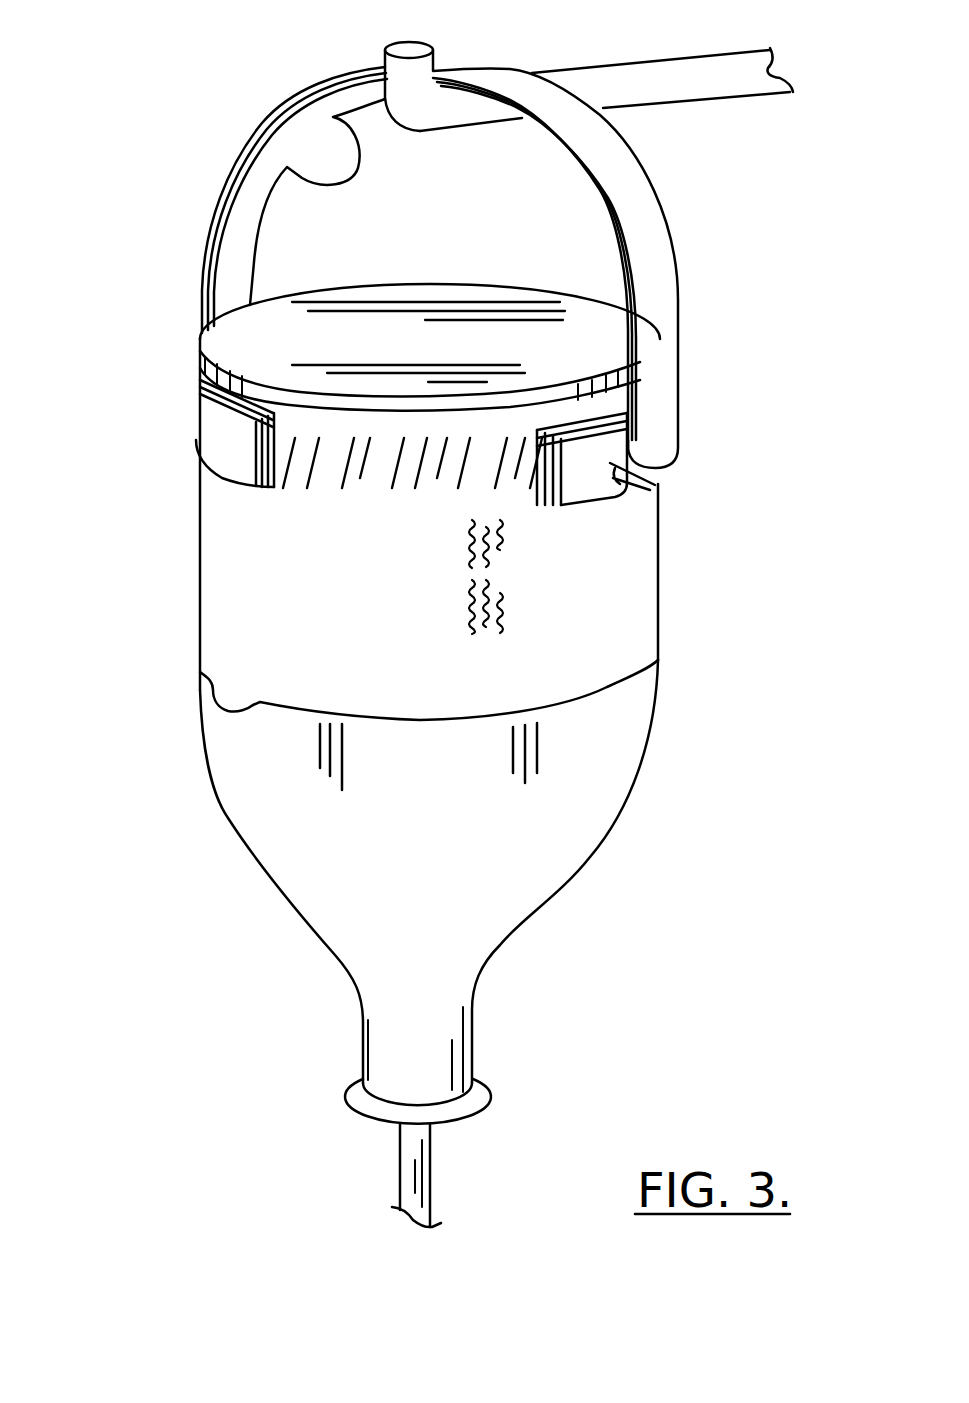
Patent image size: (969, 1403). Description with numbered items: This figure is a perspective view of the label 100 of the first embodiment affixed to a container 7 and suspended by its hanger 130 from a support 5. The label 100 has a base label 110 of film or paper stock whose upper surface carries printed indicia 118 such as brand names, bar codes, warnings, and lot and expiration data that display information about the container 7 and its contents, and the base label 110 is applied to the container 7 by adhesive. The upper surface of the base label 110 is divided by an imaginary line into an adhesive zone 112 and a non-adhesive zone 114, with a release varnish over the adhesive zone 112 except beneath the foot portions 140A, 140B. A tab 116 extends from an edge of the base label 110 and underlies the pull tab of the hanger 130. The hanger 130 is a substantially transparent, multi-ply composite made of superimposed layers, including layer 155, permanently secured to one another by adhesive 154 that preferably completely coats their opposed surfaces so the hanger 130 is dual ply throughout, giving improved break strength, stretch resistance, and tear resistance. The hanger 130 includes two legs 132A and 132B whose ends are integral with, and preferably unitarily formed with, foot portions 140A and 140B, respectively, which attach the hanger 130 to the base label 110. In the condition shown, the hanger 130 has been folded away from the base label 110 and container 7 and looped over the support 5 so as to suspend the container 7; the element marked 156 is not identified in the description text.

The support 5 is at (664, 74).
The container 7 is at (480, 913).
The label 100 is at (441, 755).
The base label 110 is at (288, 705).
The adhesive zone 112 is at (448, 460).
The non-adhesive zone 114 is at (393, 705).
The tab 116 is at (220, 713).
The indicia 118 is at (228, 617).
The hanger 130 is at (465, 307).
The leg 132A is at (632, 268).
The leg 132B is at (247, 238).
The foot portion 140A is at (613, 475).
The foot portion 140B is at (223, 473).
The adhesive 154 is at (627, 342).
The layer 155 is at (627, 380).
The strap outer surface 156 is at (663, 322).